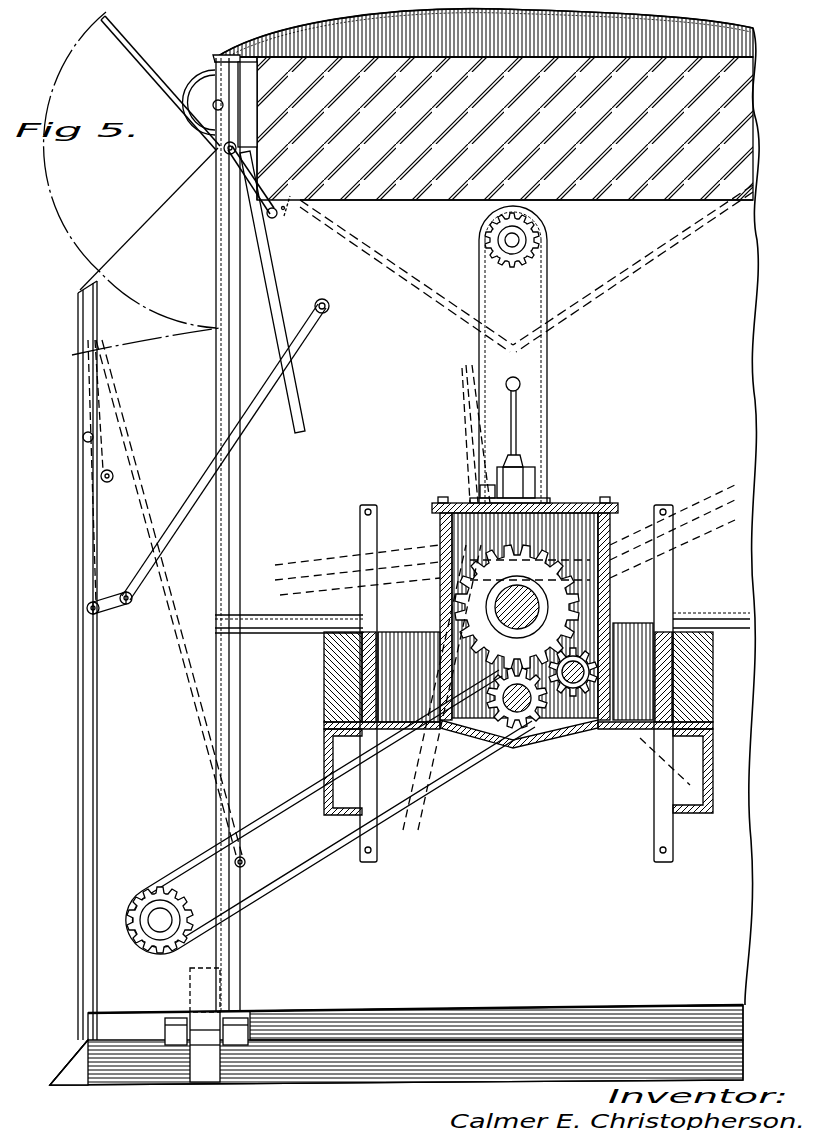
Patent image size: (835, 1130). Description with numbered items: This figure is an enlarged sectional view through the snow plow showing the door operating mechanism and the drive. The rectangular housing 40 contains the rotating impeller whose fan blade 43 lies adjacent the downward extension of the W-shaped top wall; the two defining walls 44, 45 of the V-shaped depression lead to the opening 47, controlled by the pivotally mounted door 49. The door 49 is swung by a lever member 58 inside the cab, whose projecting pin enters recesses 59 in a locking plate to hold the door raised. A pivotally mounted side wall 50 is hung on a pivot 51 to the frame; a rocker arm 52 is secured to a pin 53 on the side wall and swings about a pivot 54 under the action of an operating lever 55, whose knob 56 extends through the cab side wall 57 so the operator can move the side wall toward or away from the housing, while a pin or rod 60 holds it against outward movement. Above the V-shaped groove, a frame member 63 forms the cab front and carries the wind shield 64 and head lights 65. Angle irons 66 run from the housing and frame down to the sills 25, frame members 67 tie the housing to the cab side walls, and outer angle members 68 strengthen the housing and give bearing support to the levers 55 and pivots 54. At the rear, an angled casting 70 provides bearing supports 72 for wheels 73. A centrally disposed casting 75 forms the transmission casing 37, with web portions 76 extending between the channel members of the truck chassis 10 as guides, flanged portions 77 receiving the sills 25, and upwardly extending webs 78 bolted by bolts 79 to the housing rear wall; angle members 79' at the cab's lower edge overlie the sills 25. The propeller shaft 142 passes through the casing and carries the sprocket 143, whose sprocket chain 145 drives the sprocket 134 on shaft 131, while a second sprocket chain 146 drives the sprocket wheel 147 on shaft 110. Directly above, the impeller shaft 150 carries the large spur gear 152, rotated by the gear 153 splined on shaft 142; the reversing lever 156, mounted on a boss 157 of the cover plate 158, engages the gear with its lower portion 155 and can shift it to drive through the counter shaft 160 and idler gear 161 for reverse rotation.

The truck chassis 10 is at (340, 790).
The sills 25 is at (333, 702).
The transmission casing 37 is at (440, 558).
The housing 40 is at (655, 358).
The impeller or fan blade 43 is at (470, 418).
The defining wall 44 is at (636, 250).
The defining wall 45 is at (386, 250).
The opening 47 is at (170, 215).
The door 49 is at (137, 53).
The side wall 50 is at (178, 655).
The pivot 51 is at (246, 862).
The rocker arm 52 is at (90, 562).
The pin 53 is at (100, 478).
The pivot 54 is at (88, 610).
The operating lever 55 is at (210, 492).
The operating knob 56 is at (328, 305).
The side wall of the cab 57 is at (216, 388).
The lever member 58 is at (262, 197).
The recess 59 is at (284, 218).
The pin or rod 60 is at (82, 437).
The frame member 63 is at (330, 55).
The wind shield 64 is at (292, 82).
The head light 65 is at (200, 75).
The supporting angle iron or bracket member 66 is at (297, 400).
The frame member 67 is at (240, 768).
The outer angle member 68 is at (85, 840).
The angled casting 70 is at (78, 1080).
The bearing support 72 is at (175, 1046).
The wheel 73 is at (205, 1085).
The centrally disposed casting 75 is at (555, 742).
The web portion 76 is at (378, 842).
The flanged portion 77 is at (383, 673).
The upwardly extending web portion 78 is at (360, 555).
The bolt 79 is at (559, 560).
The angle member 79' is at (289, 640).
The shaft 110 is at (528, 242).
The shaft 131 is at (160, 920).
The sprocket 134 is at (135, 930).
The propeller shaft 142 is at (520, 740).
The sprocket 143 is at (308, 562).
The sprocket chain 145 is at (210, 862).
The sprocket chain 146 is at (548, 420).
The sprocket wheel 147 is at (482, 243).
The second shaft 150 is at (480, 565).
The large spur gear 152 is at (560, 570).
The gear 153 is at (520, 748).
The lower portion of reversing lever 155 is at (550, 500).
The reversing lever 156 is at (518, 408).
The boss 157 is at (540, 490).
The cover plate 158 is at (478, 500).
The counter shaft 160 is at (590, 670).
The idler gear 161 is at (612, 660).